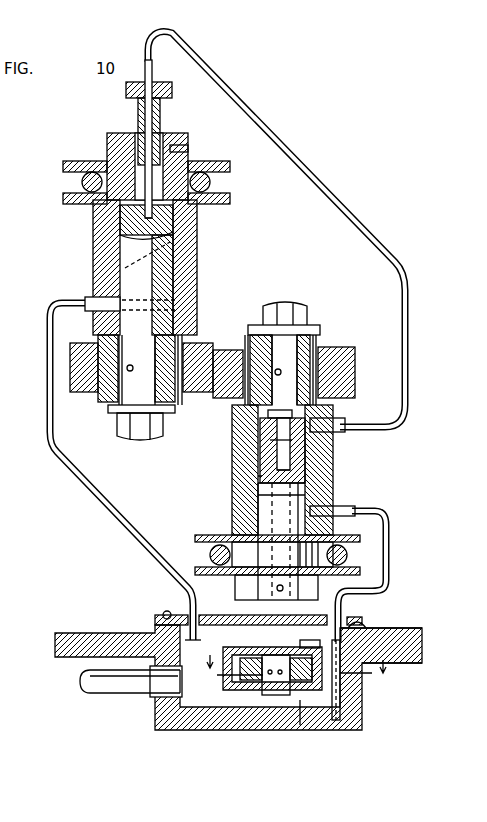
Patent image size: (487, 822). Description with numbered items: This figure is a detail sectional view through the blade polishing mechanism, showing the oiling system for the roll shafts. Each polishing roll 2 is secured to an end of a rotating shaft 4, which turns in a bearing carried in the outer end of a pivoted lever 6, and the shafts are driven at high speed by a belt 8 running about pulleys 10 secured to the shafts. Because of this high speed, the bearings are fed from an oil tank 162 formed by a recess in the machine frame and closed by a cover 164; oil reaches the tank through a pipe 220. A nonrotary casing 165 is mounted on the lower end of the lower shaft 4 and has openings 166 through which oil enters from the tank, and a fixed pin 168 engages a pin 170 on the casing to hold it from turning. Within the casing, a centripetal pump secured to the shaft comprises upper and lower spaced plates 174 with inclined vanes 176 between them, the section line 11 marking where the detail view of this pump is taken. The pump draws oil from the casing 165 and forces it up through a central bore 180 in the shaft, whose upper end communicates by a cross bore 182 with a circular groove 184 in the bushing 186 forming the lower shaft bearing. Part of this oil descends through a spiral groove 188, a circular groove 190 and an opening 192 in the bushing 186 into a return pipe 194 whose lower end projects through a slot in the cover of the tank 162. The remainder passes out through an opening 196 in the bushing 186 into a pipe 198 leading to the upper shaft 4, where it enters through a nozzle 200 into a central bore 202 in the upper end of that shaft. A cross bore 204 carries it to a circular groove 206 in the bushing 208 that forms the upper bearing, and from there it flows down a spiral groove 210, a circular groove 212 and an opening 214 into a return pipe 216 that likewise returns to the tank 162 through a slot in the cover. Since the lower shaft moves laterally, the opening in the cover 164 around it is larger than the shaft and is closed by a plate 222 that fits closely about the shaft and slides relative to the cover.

The polishing rolls 2 is at (72, 362).
The rotating shafts 4 is at (160, 270).
The pivoted levers 6 is at (193, 272).
The belt 8 is at (222, 182).
The pulleys 10 is at (232, 170).
The section line 11 is at (300, 670).
The oil tank 162 is at (222, 730).
The cover 164 is at (365, 622).
The nonrotary casing 165 is at (303, 728).
The openings 166 is at (300, 655).
The fixed pin 168 is at (340, 697).
The pin 170 is at (366, 641).
The upper and lower spaced plates 174 is at (225, 655).
The inclined blades or vanes 176 is at (230, 680).
The central bore 180 is at (280, 462).
The cross bore 182 is at (277, 440).
The circular groove 184 is at (265, 422).
The bushing 186 is at (255, 475).
The spiral groove 188 is at (252, 497).
The circular groove 190 is at (252, 513).
The opening 192 is at (318, 498).
The return pipe 194 is at (383, 517).
The opening 196 is at (332, 437).
The pipe 198 is at (412, 381).
The nozzle 200 is at (137, 114).
The central bore 202 is at (153, 175).
The cross bore 204 is at (118, 227).
The circular groove 206 is at (128, 218).
The bushing 208 is at (195, 237).
The spiral groove 210 is at (110, 258).
The circular groove 212 is at (185, 298).
The opening 214 is at (93, 297).
The return pipe 216 is at (47, 323).
The pipe 220 is at (110, 694).
The plate 222 is at (228, 607).